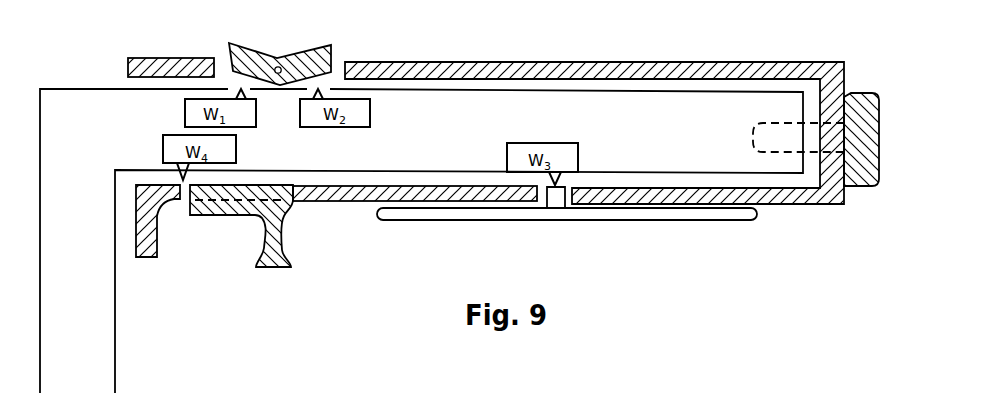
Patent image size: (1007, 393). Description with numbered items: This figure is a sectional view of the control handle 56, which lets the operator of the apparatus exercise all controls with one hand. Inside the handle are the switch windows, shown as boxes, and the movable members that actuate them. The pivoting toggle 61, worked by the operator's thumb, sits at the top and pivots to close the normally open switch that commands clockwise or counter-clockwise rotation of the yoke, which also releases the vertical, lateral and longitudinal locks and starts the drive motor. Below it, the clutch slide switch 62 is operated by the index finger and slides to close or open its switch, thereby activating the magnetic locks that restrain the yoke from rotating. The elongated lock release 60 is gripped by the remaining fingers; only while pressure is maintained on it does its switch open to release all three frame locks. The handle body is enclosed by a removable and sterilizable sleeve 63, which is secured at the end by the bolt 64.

The control handle 56 is at (892, 70).
The lock release 60 is at (593, 213).
The toggle 61 is at (312, 48).
The clutch slide switch 62 is at (272, 263).
The sleeve 63 is at (722, 72).
The bolt 64 is at (879, 156).